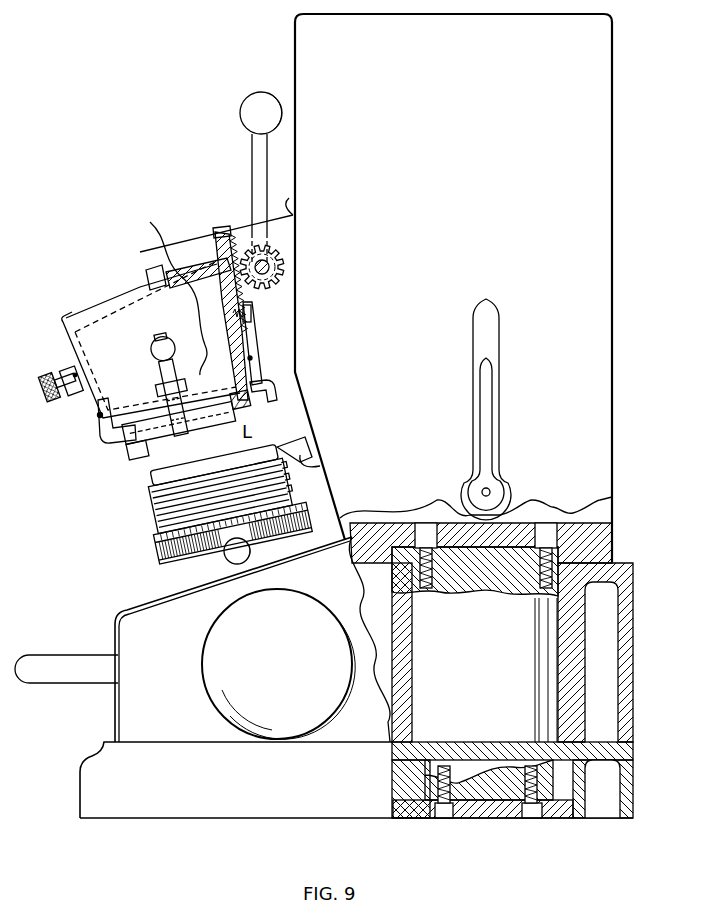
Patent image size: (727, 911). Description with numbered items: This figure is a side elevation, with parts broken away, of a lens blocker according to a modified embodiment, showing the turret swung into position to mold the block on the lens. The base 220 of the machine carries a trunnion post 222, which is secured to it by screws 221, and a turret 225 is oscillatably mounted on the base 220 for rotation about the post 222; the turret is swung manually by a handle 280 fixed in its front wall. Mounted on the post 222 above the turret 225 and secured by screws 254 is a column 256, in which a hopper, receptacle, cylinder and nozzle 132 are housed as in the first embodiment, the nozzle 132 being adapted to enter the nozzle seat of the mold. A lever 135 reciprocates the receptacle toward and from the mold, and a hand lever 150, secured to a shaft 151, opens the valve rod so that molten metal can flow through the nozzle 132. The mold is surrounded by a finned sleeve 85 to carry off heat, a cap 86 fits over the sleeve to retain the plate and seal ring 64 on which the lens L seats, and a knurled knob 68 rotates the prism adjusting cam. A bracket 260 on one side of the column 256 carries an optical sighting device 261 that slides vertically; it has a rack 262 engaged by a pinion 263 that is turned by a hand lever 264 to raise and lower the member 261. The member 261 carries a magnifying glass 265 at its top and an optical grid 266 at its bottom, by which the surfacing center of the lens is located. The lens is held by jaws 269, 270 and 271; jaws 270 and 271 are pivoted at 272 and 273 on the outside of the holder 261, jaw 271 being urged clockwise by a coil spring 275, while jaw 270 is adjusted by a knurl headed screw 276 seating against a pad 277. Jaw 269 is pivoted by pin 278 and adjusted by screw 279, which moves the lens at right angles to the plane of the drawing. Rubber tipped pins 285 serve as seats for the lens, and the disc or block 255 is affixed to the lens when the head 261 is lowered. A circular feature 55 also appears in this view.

The circular dial face 55 is at (212, 687).
The seal ring 64 is at (166, 479).
The knurled knob 68 is at (250, 559).
The finned sleeve 85 is at (160, 536).
The cap 86 is at (160, 504).
The nozzle 132 is at (306, 462).
The lever 135 is at (497, 344).
The hand lever 150 is at (488, 431).
The shaft 151 is at (490, 491).
The base 220 is at (80, 783).
The screws 221 is at (442, 818).
The trunnion post 222 is at (548, 699).
The turret 225 is at (126, 612).
The screws 254 is at (548, 527).
The disc or block 255 is at (192, 447).
The column 256 is at (614, 311).
The bracket 260 is at (290, 201).
The optical sighting device 261 is at (213, 240).
The rack 262 is at (222, 230).
The pinion 263 is at (285, 268).
The hand lever 264 is at (258, 156).
The magnifying glass 265 is at (133, 295).
The optical grid 266 is at (236, 390).
The jaw 269 is at (158, 362).
The jaw 270 is at (105, 450).
The jaw 271 is at (268, 405).
The pivot 272 is at (97, 417).
The pivot 273 is at (251, 360).
The coil spring 275 is at (251, 312).
The knurl headed screw 276 is at (45, 396).
The pad 277 is at (73, 370).
The pin 278 is at (202, 372).
The screw 279 is at (144, 343).
The handle 280 is at (49, 661).
The rubber tipped pins 285 is at (144, 452).